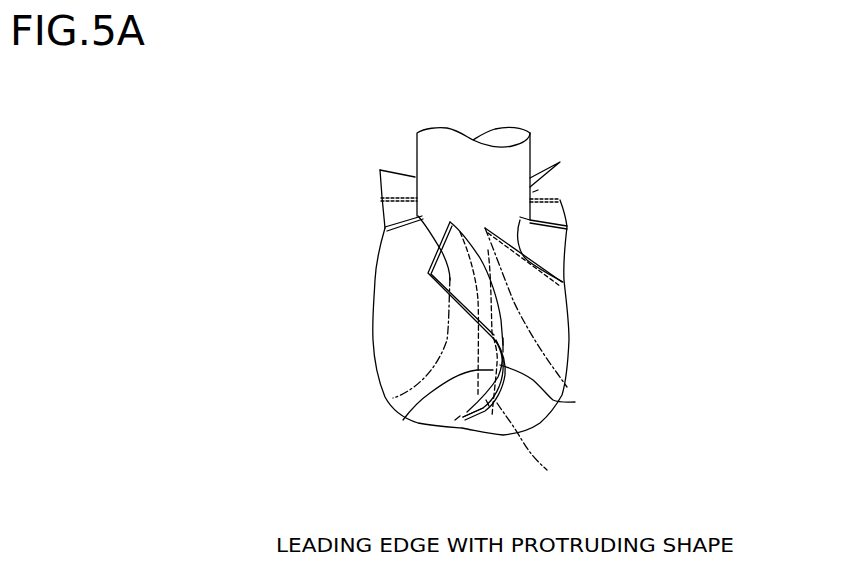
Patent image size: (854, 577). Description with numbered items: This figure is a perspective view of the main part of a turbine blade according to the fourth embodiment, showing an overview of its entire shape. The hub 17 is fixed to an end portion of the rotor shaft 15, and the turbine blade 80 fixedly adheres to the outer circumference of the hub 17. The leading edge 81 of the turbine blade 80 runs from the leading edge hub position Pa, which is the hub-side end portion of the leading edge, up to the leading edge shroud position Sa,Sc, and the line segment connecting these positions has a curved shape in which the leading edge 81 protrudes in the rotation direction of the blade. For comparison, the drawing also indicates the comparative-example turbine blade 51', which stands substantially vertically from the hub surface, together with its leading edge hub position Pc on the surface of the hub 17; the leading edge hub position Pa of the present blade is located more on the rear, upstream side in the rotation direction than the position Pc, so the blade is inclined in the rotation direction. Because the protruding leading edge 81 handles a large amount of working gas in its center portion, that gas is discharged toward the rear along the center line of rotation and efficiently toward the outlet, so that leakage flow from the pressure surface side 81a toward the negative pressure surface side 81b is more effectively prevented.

The rotor shaft 15 is at (512, 135).
The hub 17 is at (550, 415).
The turbine blade 80 is at (437, 254).
The leading edge 81 is at (478, 410).
The pressure surface side 81a is at (467, 414).
The negative pressure surface side 81b is at (503, 338).
The leading edge hub position Pa is at (457, 417).
The leading edge hub position of the comparative example Pc is at (487, 403).
The turbine blade of the comparative example 51' is at (545, 444).
The leading edge shroud position Sa,Sc is at (574, 390).